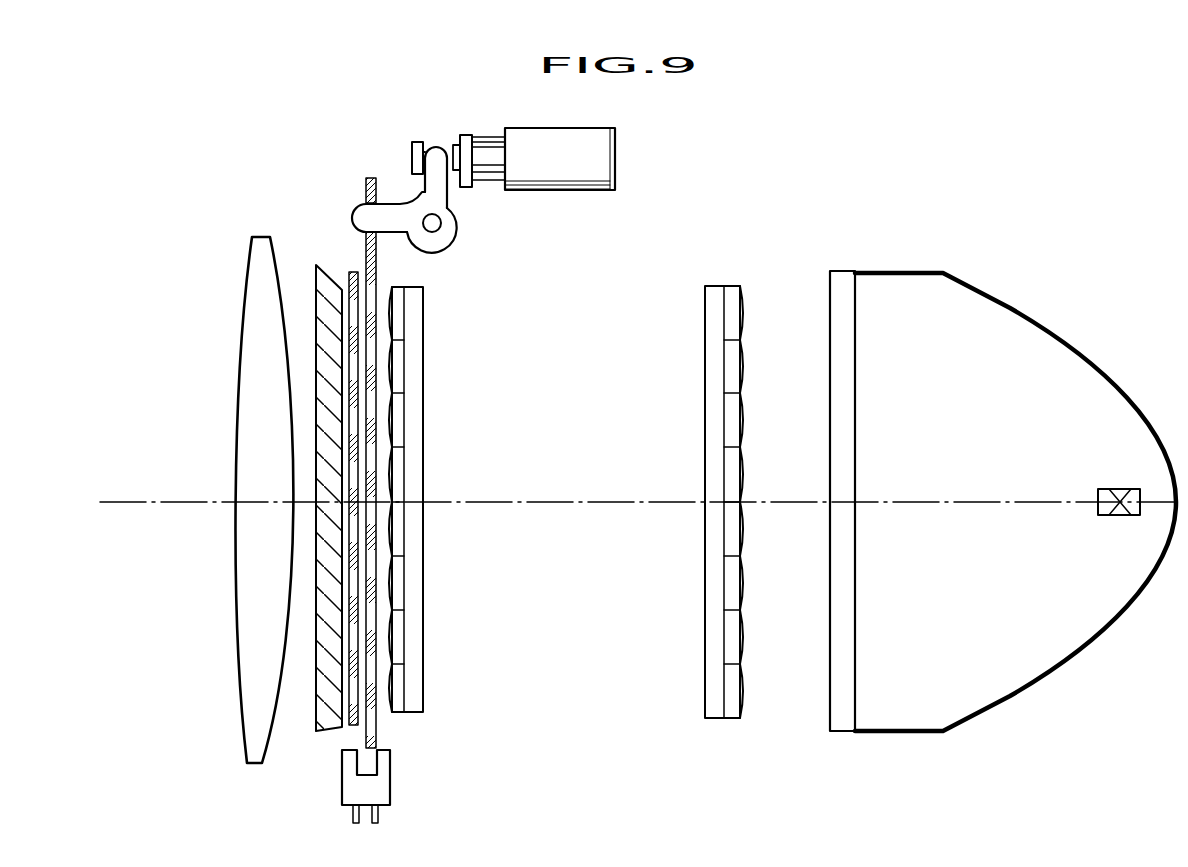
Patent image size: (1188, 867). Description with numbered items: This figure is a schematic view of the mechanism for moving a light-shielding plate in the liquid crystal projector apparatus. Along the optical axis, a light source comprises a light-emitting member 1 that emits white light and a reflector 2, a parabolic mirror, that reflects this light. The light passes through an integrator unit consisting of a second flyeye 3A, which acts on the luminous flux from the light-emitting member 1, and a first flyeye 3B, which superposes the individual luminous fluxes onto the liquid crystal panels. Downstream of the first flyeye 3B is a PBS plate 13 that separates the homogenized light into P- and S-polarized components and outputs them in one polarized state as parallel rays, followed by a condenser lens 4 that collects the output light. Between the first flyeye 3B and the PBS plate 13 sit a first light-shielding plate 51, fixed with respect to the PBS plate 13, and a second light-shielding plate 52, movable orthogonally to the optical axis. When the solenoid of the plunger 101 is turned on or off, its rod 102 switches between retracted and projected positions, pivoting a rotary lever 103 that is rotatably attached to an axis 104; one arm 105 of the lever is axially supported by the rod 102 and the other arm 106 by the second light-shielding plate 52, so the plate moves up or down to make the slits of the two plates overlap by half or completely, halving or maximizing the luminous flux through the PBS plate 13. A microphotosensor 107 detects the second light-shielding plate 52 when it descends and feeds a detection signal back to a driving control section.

The light-emitting member 1 is at (1112, 489).
The reflector 2 is at (1052, 331).
The second flyeye 3A is at (718, 286).
The first flyeye 3B is at (416, 287).
The condenser lens 4 is at (250, 272).
The PBS plate 13 is at (320, 272).
The first light-shielding plate 51 is at (357, 725).
The second light-shielding plate 52 is at (375, 723).
The plunger 101 is at (605, 153).
The rod 102 is at (470, 138).
The rotary lever 103 is at (458, 211).
The axis 104 is at (440, 226).
The one arm 105 is at (441, 157).
The other arm 106 is at (360, 213).
The microphotosensor 107 is at (377, 788).